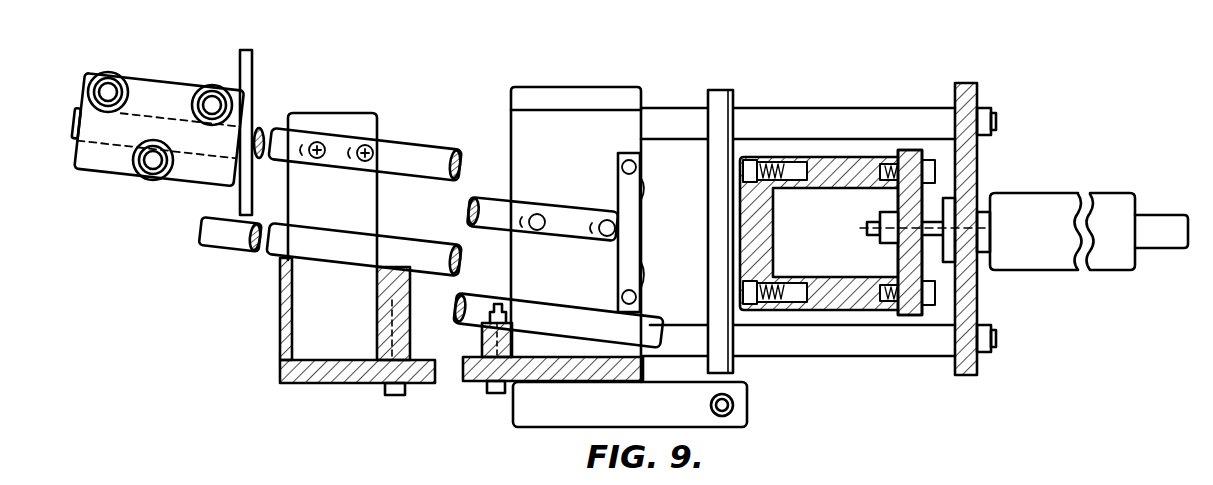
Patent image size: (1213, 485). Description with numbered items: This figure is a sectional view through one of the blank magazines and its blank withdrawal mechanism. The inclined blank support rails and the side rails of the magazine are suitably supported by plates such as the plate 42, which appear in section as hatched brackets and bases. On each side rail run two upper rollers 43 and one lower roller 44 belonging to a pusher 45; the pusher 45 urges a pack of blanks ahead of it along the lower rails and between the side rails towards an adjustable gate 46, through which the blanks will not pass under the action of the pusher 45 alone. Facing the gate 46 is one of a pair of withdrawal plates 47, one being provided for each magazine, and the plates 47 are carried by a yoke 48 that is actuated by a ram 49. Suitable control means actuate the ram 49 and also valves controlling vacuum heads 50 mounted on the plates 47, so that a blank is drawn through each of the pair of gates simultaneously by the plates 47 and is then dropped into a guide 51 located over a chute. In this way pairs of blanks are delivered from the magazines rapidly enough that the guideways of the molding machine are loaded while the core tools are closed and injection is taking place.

The plate 42 is at (292, 344).
The upper roller 43 is at (108, 56).
The lower roller 44 is at (147, 178).
The pusher 45 is at (252, 80).
The adjustable gate 46 is at (630, 231).
The withdrawal plate 47 is at (762, 218).
The yoke 48 is at (912, 268).
The ram 49 is at (1015, 260).
The vacuum head 50 is at (735, 186).
The guide 51 is at (723, 353).